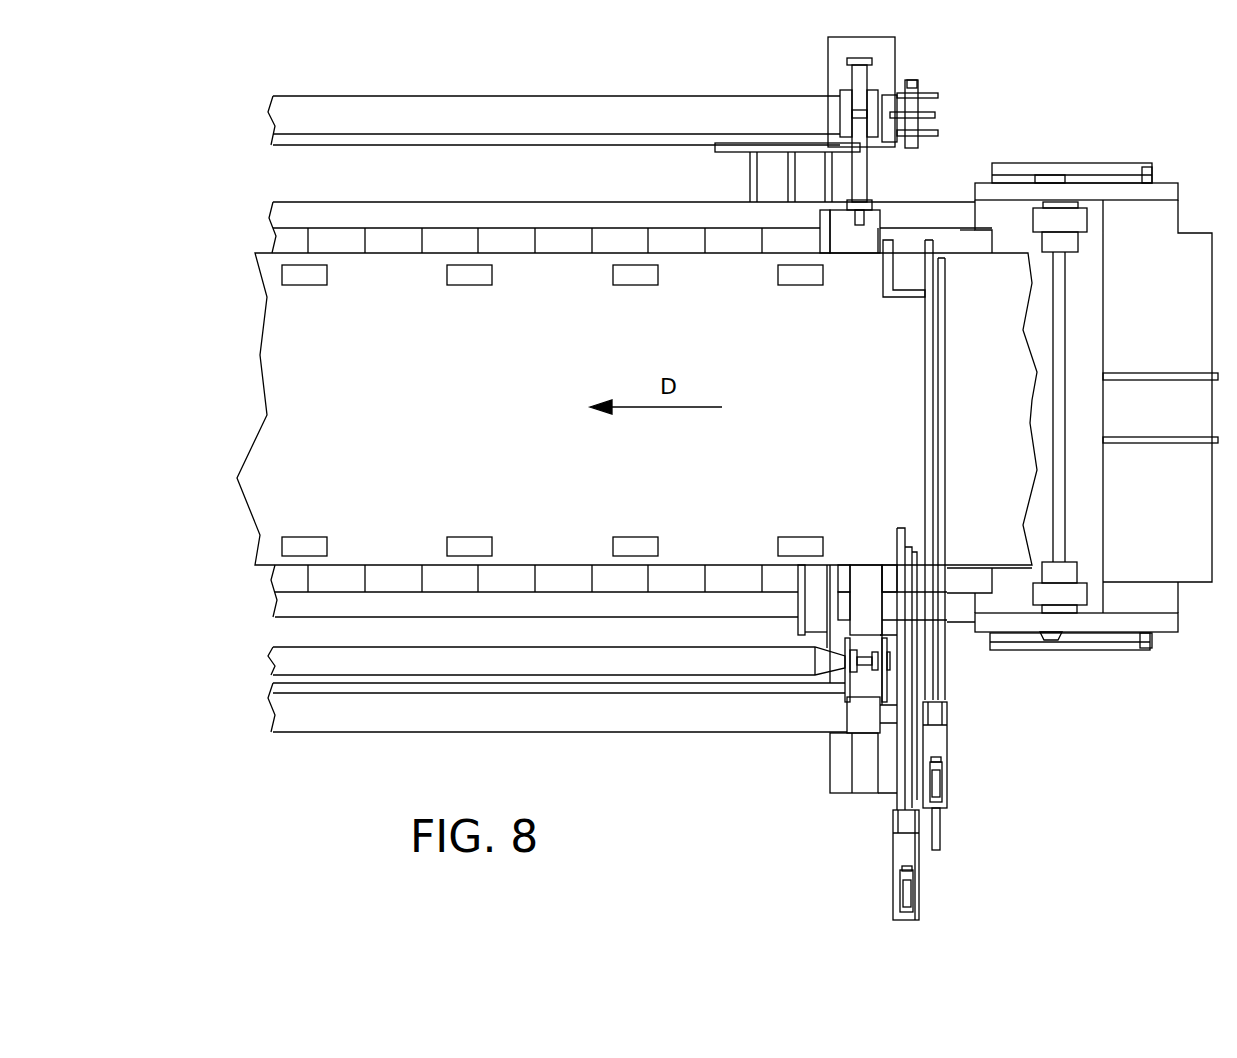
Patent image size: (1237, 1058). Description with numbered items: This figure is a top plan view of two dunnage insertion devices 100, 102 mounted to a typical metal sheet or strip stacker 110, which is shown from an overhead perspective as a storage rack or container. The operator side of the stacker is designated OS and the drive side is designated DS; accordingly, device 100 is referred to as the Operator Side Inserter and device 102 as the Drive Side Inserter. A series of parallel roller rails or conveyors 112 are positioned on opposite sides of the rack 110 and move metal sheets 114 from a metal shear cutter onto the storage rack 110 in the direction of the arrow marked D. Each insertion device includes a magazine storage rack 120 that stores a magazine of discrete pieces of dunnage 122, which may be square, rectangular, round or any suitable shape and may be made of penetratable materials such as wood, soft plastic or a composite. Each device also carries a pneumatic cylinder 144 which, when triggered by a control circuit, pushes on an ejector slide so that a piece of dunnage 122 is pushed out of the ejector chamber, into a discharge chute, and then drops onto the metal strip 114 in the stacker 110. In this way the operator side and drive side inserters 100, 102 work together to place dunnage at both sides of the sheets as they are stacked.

The dunnage insertion device 100 is at (893, 845).
The dunnage insertion device 102 is at (950, 756).
The stacker 110 is at (276, 574).
The roller rails 112 is at (342, 578).
The metal sheets 114 is at (270, 432).
The magazine storage rack 120 is at (938, 736).
The dunnage 122 is at (468, 278).
The pneumatic cylinder 144 is at (938, 786).
The drive side DS is at (556, 87).
The operator side OS is at (577, 750).